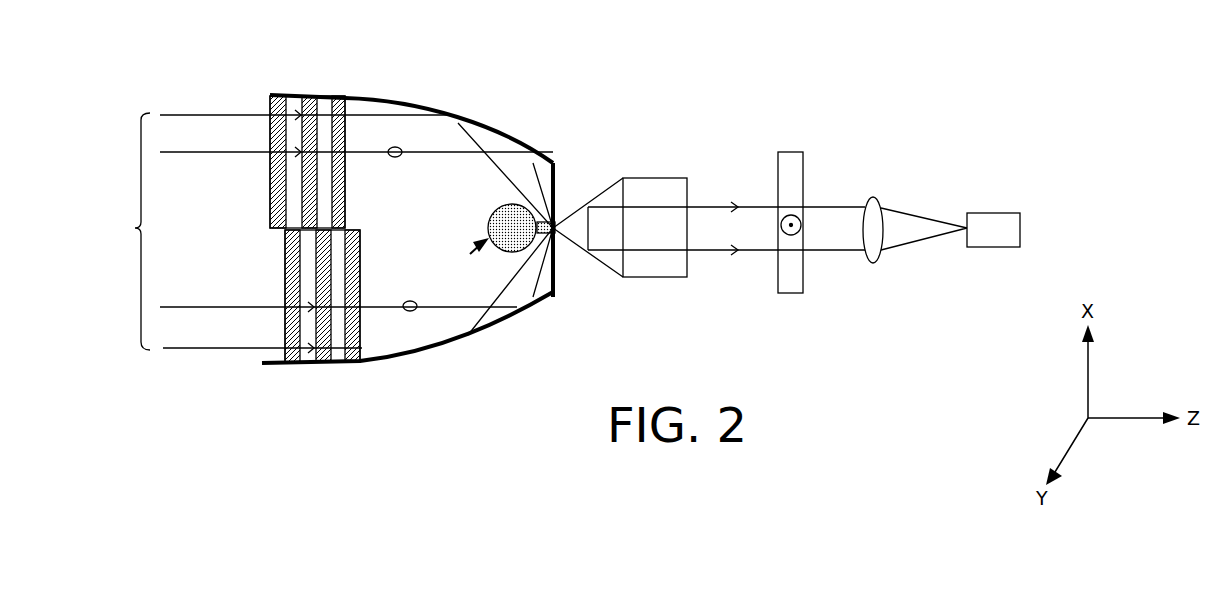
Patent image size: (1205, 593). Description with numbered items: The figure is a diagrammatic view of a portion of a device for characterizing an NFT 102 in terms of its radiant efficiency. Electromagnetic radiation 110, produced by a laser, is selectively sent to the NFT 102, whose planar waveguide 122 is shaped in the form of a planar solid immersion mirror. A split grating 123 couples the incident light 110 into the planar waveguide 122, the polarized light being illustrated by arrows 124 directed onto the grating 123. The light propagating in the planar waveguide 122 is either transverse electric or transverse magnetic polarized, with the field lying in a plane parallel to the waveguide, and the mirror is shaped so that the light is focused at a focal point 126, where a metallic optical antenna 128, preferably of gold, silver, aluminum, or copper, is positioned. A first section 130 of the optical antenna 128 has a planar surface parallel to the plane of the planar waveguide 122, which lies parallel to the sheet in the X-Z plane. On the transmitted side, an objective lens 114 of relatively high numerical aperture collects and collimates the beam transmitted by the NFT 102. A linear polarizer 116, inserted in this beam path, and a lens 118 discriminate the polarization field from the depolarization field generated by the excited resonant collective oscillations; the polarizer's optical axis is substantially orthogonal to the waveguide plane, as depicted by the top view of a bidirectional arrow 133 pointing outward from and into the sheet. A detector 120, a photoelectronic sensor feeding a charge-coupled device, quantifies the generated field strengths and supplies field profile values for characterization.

The NFT 102 is at (346, 95).
The electromagnetic radiation 110 is at (135, 229).
The objective lens 114 is at (628, 178).
The linear polarizer 116 is at (790, 152).
The lens 118 is at (873, 197).
The detector 120 is at (985, 213).
The planar waveguide 122 is at (326, 365).
The split grating 123 is at (277, 232).
The arrows 124 is at (392, 157).
The focal point 126 is at (572, 243).
The metallic optical antenna 128 is at (482, 263).
The first section of the optical antenna 130 is at (506, 205).
The bidirectional arrow 133 is at (802, 228).